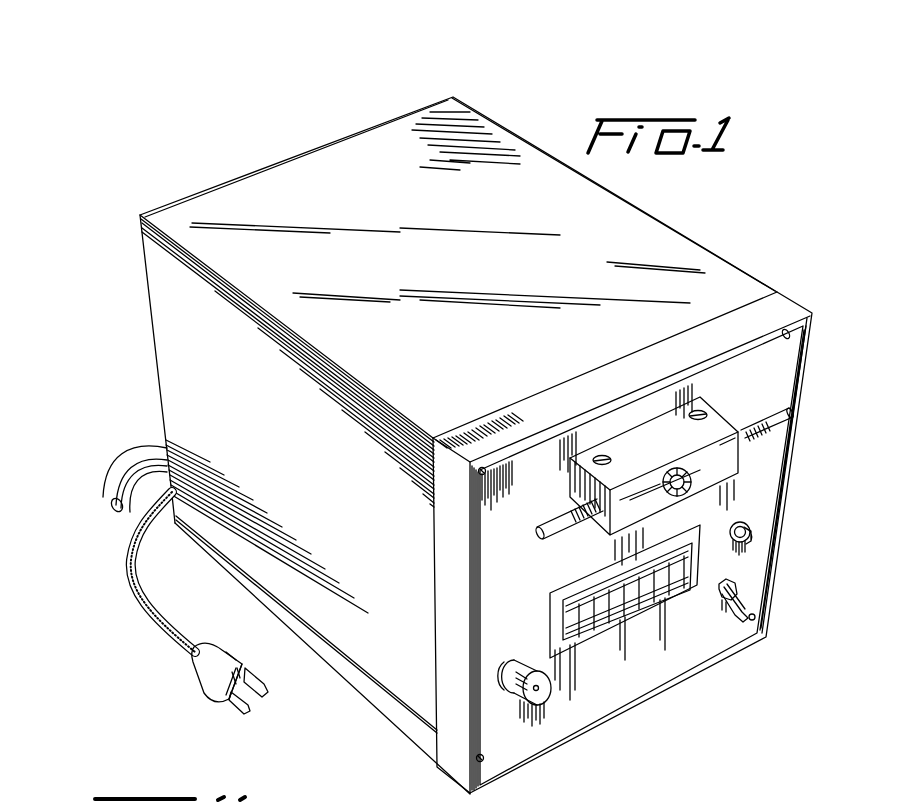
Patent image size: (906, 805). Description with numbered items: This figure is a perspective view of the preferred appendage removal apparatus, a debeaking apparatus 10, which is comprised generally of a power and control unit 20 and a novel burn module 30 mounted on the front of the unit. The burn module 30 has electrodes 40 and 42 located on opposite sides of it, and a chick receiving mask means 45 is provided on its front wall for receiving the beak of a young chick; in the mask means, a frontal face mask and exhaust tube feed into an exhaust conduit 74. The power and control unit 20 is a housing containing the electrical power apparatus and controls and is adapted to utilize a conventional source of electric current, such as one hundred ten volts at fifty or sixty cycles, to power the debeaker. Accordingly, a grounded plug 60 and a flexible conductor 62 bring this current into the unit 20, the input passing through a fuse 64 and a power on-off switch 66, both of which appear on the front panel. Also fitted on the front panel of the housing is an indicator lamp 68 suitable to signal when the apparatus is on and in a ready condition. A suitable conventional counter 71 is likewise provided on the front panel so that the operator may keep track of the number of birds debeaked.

The debeaking apparatus 10 is at (722, 239).
The power and control unit 20 is at (232, 193).
The burn module 30 is at (743, 405).
The electrode 40 is at (763, 430).
The electrode 42 is at (540, 536).
The chick receiving mask means 45 is at (691, 481).
The grounded plug 60 is at (198, 676).
The flexible conductor 62 is at (130, 575).
The fuse 64 is at (533, 707).
The power on-off switch 66 is at (752, 608).
The indicator lamp 68 is at (752, 537).
The counter 71 is at (637, 626).
The exhaust conduit 74 is at (130, 467).